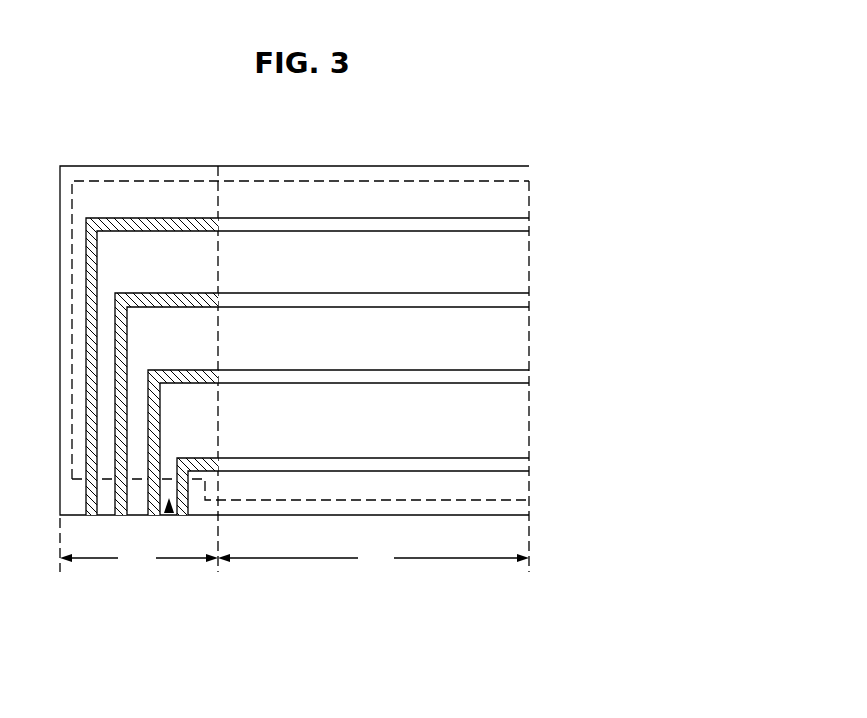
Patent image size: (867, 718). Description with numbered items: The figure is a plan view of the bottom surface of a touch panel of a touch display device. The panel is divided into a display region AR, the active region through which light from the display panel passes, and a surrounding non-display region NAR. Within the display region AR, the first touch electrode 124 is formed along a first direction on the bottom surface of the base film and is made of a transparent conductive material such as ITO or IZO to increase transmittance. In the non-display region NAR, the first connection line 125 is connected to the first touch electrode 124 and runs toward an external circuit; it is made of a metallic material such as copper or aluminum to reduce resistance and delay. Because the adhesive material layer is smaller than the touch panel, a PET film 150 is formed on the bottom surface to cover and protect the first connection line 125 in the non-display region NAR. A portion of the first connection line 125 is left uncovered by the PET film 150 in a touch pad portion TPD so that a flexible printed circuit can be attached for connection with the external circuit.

The PET film 150 is at (301, 181).
The first touch electrode 124 is at (350, 222).
The first connection line 125 is at (98, 259).
The touch pad portion TPD is at (169, 516).
The non-display region NAR is at (139, 559).
The display region AR is at (373, 559).